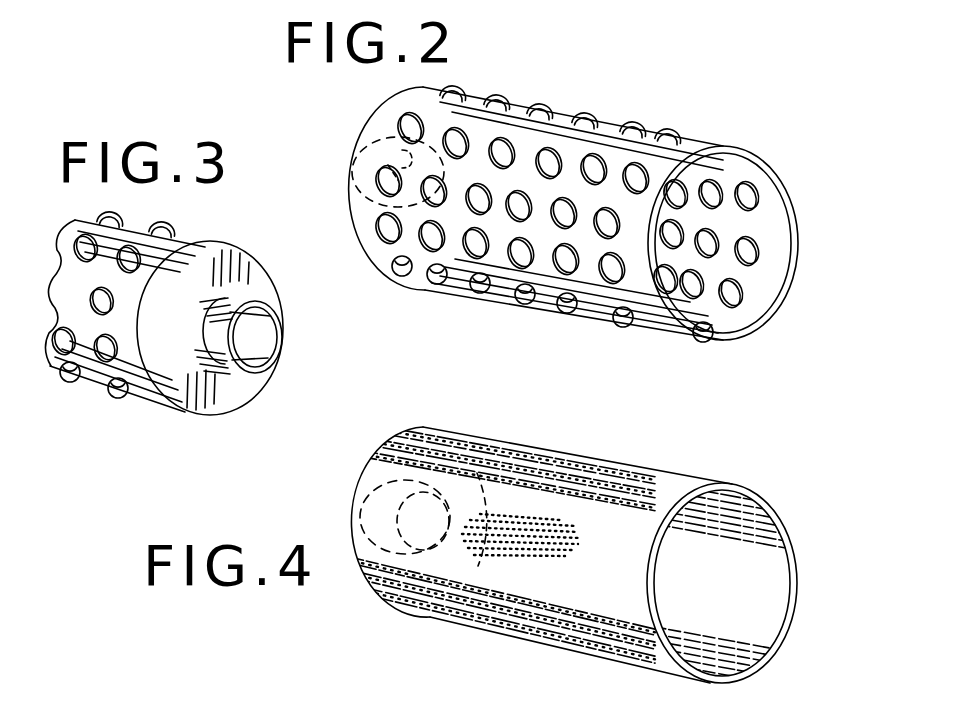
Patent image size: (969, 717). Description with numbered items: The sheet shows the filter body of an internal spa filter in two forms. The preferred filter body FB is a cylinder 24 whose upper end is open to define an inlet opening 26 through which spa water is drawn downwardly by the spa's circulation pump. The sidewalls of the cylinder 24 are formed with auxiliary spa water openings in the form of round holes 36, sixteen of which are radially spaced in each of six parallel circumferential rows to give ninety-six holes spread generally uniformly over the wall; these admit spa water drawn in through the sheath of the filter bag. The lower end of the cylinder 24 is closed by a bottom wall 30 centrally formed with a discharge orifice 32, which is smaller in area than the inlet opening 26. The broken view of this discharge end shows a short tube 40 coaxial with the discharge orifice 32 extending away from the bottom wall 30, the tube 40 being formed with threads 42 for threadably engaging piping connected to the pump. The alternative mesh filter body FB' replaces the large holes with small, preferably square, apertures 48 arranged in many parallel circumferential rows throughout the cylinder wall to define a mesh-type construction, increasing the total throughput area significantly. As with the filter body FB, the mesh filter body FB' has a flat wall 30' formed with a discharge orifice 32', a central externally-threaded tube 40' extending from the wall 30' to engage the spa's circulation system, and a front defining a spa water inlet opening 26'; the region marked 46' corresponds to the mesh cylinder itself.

In FIG. 2, the cylinder 24 is at (705, 142).
In FIG. 2, the inlet opening 26 is at (753, 243).
In FIG. 3, the bottom wall 30 is at (164, 305).
In FIG. 2, the discharge orifice 32 is at (373, 145).
In FIG. 3, the discharge orifice 32 is at (253, 328).
In FIG. 2, the holes 36 is at (632, 128).
In FIG. 3, the holes 36 is at (80, 386).
In FIG. 2, the short tube 40 is at (345, 177).
In FIG. 3, the short tube 40 is at (285, 337).
In FIG. 3, the threads 42 is at (213, 378).
In FIG. 2, the filter body FB is at (807, 320).
In FIG. 3, the filter body FB is at (67, 213).
In FIG. 4, the flat wall 30' is at (541, 534).
In FIG. 4, the spa water inlet opening 26' is at (754, 583).
In FIG. 4, the apertures 48 is at (498, 452).
In FIG. 4, the mesh filter body FB' is at (670, 444).
In FIG. 4, the discharge orifice 32' is at (380, 558).
In FIG. 4, the externally-threaded tube 40' is at (365, 513).
In FIG. 4, the porous region 46' is at (555, 519).